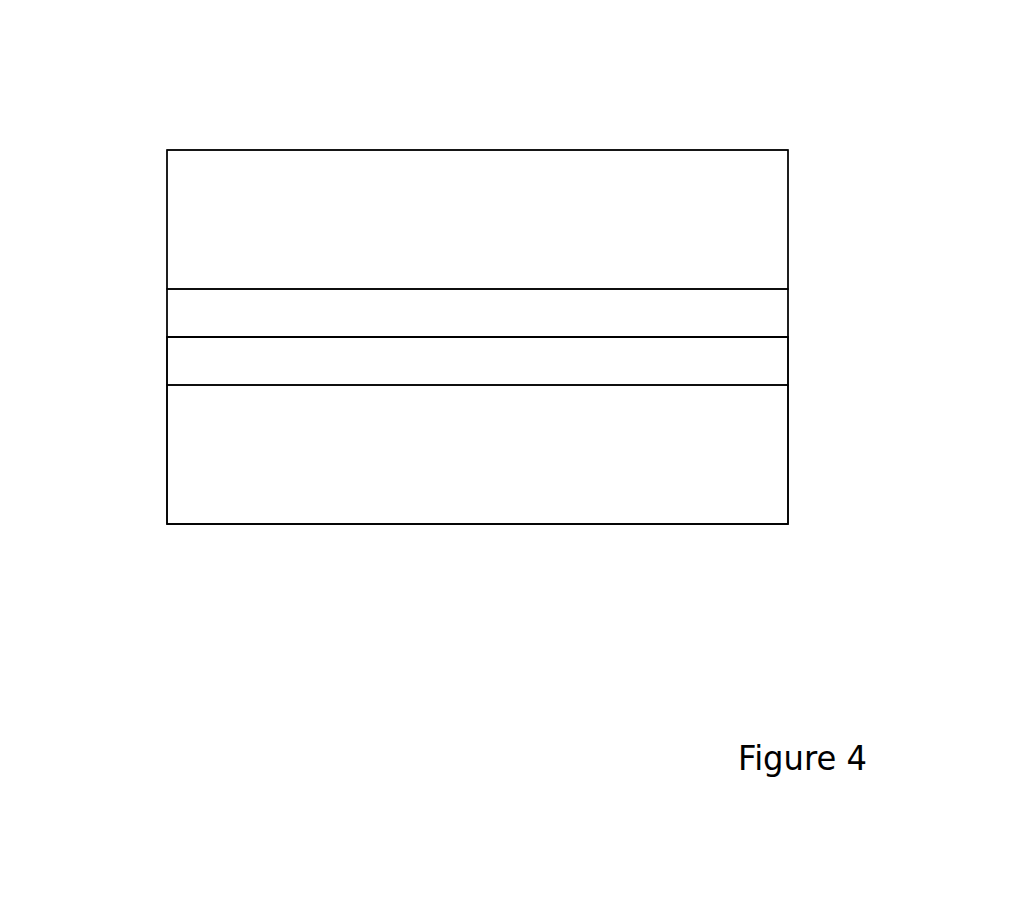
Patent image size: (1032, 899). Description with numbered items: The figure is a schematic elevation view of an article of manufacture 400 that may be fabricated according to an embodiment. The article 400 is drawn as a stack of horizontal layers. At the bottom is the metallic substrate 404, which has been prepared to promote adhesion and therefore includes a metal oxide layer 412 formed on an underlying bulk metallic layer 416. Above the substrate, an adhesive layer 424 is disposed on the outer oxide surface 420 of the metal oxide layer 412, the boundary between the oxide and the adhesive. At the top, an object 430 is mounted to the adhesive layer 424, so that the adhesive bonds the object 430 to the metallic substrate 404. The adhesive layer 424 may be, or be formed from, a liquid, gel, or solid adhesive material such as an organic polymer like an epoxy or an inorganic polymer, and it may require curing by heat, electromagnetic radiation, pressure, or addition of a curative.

The article of manufacture 400 is at (100, 90).
The metallic substrate 404 is at (128, 434).
The metal oxide layer 412 is at (788, 363).
The bulk metallic layer 416 is at (788, 452).
The outer oxide surface 420 is at (183, 337).
The adhesive layer 424 is at (788, 323).
The object 430 is at (788, 203).